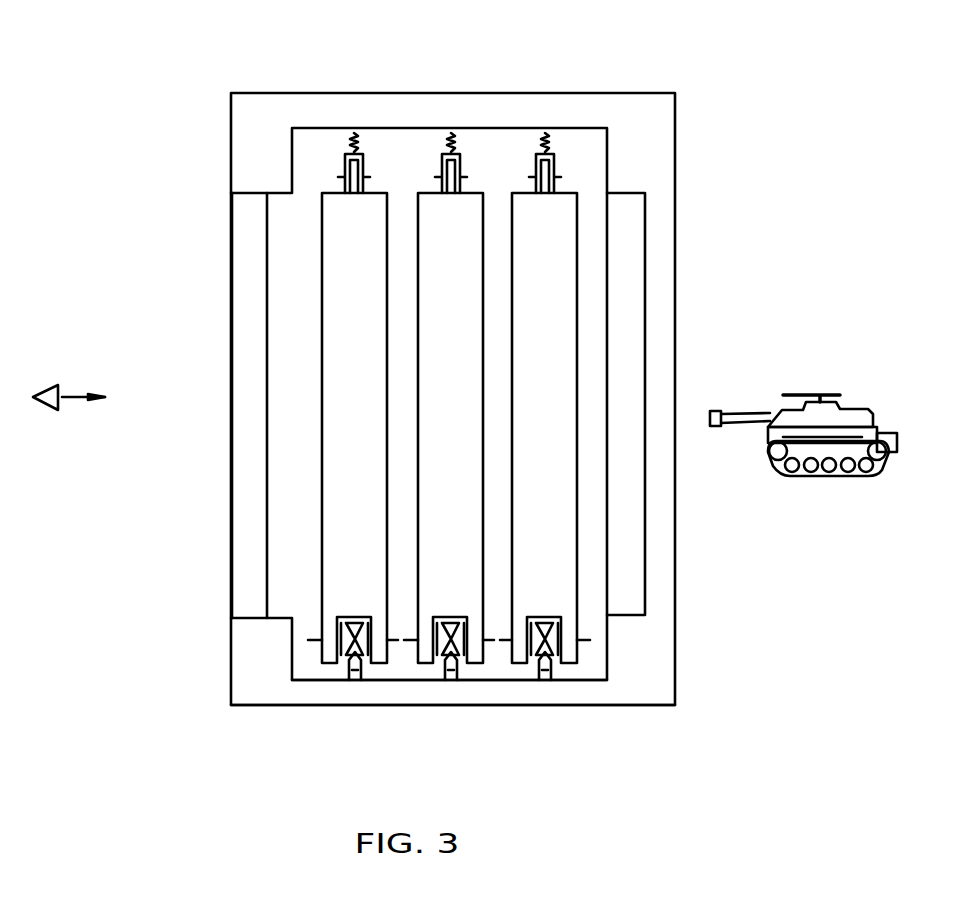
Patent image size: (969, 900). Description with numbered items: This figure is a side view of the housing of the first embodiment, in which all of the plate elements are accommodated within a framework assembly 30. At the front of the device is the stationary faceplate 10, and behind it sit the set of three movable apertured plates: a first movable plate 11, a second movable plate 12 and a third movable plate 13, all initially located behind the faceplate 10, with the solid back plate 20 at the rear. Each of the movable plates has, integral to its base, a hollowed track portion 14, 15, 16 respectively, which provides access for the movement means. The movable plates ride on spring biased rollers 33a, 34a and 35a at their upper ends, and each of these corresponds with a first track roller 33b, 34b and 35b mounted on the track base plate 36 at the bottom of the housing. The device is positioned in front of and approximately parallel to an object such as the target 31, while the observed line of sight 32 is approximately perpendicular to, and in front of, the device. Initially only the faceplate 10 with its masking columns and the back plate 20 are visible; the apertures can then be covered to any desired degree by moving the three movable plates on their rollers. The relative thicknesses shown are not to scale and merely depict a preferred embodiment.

The stationary front apertured plate 10 is at (250, 391).
The first movable apertured plate 11 is at (347, 311).
The second movable apertured plate 12 is at (462, 238).
The third movable apertured plate 13 is at (550, 226).
The hollowed track portion 14 is at (330, 652).
The hollowed track portion 15 is at (425, 651).
The hollowed track portion 16 is at (520, 652).
The back plate 20 is at (628, 289).
The framework assembly 30 is at (256, 648).
The target 31 is at (857, 478).
The observed line of sight 32 is at (50, 410).
The spring biased roller 33a is at (342, 176).
The spring biased roller 34a is at (439, 176).
The spring biased roller 35a is at (552, 170).
The first track roller 33b is at (348, 672).
The first track roller 34b is at (452, 670).
The first track roller 35b is at (545, 672).
The track base plate 36 is at (585, 690).